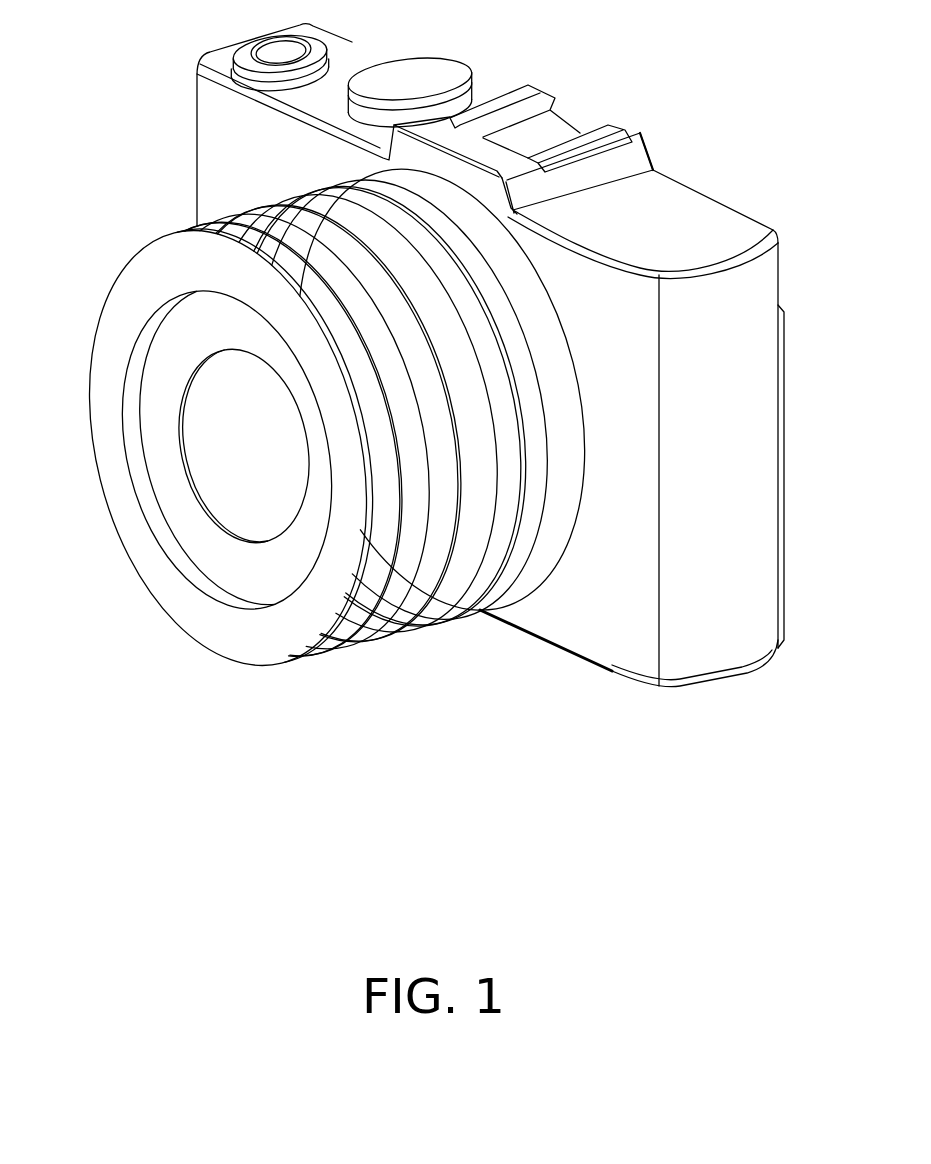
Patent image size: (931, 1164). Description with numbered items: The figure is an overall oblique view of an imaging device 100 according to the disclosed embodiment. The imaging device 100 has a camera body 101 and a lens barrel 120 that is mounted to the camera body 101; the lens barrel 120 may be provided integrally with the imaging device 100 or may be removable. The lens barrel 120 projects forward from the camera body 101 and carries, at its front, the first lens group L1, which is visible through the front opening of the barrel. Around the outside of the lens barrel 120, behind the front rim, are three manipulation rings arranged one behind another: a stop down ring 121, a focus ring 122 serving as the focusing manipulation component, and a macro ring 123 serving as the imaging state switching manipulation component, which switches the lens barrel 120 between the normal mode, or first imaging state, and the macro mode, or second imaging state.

The imaging device 100 is at (727, 134).
The camera body 101 is at (759, 676).
The lens barrel 120 is at (117, 248).
The stop down ring 121 is at (397, 600).
The focus ring 122 is at (458, 583).
The macro ring 123 is at (515, 568).
The first lens group L1 is at (240, 435).